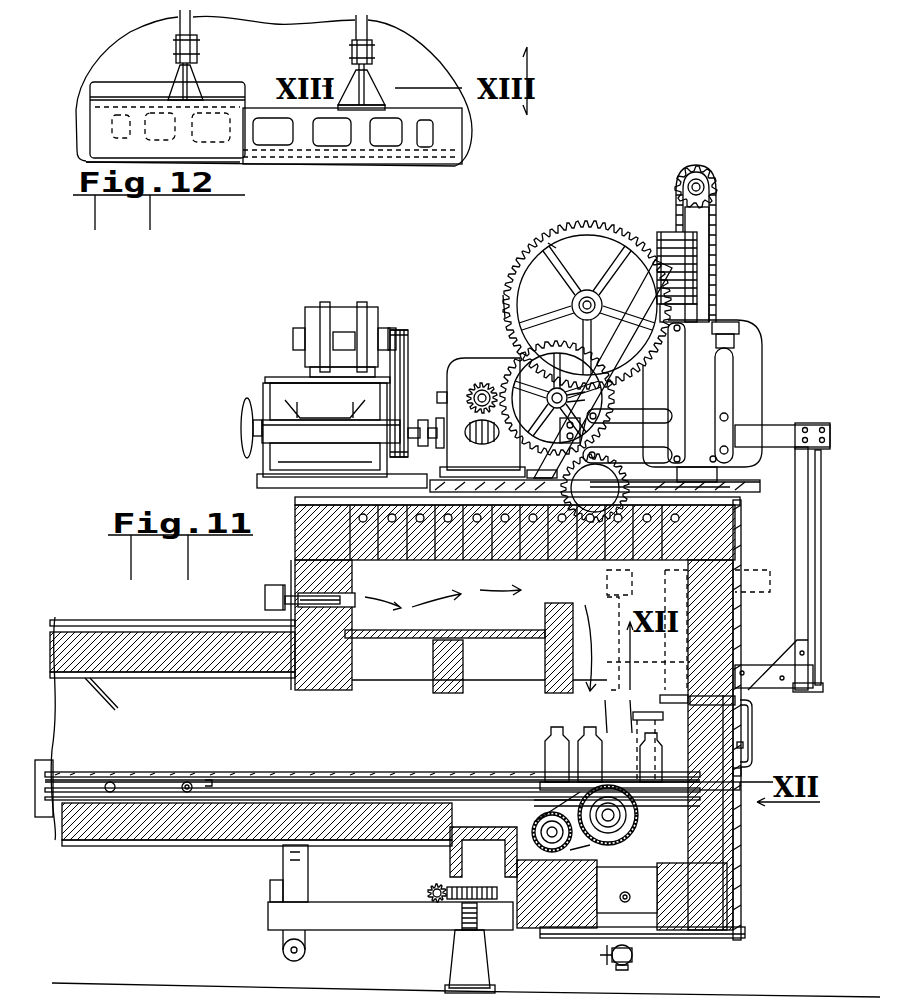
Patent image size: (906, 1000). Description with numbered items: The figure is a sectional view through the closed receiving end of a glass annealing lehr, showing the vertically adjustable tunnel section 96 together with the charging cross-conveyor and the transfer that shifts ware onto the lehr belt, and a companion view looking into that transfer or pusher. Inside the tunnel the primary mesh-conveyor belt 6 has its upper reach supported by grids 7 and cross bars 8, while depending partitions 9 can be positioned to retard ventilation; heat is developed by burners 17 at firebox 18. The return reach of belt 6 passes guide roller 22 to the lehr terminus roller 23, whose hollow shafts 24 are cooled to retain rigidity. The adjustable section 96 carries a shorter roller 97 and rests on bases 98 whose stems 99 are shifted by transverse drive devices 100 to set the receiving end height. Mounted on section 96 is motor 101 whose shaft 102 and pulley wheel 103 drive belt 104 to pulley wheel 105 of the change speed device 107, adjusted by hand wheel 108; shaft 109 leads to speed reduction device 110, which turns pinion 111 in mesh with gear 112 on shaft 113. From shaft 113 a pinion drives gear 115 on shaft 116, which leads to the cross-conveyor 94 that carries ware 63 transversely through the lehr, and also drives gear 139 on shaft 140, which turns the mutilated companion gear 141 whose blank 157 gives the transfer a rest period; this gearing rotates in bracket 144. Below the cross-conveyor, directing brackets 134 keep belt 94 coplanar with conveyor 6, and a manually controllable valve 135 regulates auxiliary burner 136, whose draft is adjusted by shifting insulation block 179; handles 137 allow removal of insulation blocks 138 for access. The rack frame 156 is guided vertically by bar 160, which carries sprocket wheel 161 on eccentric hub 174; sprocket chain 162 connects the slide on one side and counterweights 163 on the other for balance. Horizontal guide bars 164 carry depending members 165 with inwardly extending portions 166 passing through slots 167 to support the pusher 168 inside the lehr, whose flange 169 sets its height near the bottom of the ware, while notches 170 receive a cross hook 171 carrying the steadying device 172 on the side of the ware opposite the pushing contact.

In FIG. 11, the primary mesh-conveyor belt 6 is at (165, 772).
In FIG. 11, the grids 7 is at (208, 778).
In FIG. 11, the cross bars 8 is at (186, 785).
In FIG. 11, the depending partitions 9 is at (113, 702).
In FIG. 11, the burners 17 is at (275, 590).
In FIG. 11, the firebox 18 is at (405, 635).
In FIG. 11, the guide roller 22 is at (555, 852).
In FIG. 11, the primary conveyor lehr terminus roller 23 is at (640, 825).
In FIG. 11, the shafts 24 is at (535, 800).
In FIG. 11, the ware 63 is at (543, 745).
In FIG. 11, the cross-conveyor 94 is at (652, 757).
In FIG. 11, the adjustable section 96 is at (88, 843).
In FIG. 11, the roller 97 is at (300, 957).
In FIG. 11, the bases 98 is at (478, 953).
In FIG. 11, the stems 99 is at (460, 917).
In FIG. 11, the drive devices 100 is at (425, 893).
In FIG. 11, the motor 101 is at (375, 288).
In FIG. 11, the shaft 102 is at (405, 320).
In FIG. 11, the pulley wheel 103 is at (408, 340).
In FIG. 11, the belt 104 is at (402, 372).
In FIG. 11, the pulley wheel 105 is at (398, 458).
In FIG. 11, the change speed device 107 is at (278, 405).
In FIG. 11, the hand wheel 108 is at (240, 413).
In FIG. 11, the shaft 109 is at (390, 432).
In FIG. 11, the speed reduction device 110 is at (490, 360).
In FIG. 11, the pinion 111 is at (460, 385).
In FIG. 11, the gear 112 is at (557, 385).
In FIG. 11, the shaft 113 is at (592, 394).
In FIG. 11, the gear 115 is at (600, 485).
In FIG. 11, the shaft 116 is at (560, 440).
In FIG. 11, the directing brackets 134 is at (737, 826).
In FIG. 11, the valve 135 is at (632, 956).
In FIG. 11, the burner 136 is at (625, 893).
In FIG. 11, the handles 137 is at (752, 730).
In FIG. 11, the insulation blocks 138 is at (743, 745).
In FIG. 11, the gear 139 is at (607, 235).
In FIG. 11, the shaft 140 is at (572, 300).
In FIG. 11, the mutilated companion gear 141 is at (512, 290).
In FIG. 11, the bracket 144 is at (642, 308).
In FIG. 11, the frame 156 is at (727, 358).
In FIG. 11, the blank 157 is at (553, 240).
In FIG. 11, the bar 160 is at (702, 240).
In FIG. 11, the sprocket wheel 161 is at (718, 180).
In FIG. 11, the sprocket chain 162 is at (718, 212).
In FIG. 11, the counterweights 163 is at (666, 240).
In FIG. 11, the guide bars 164 is at (792, 410).
In FIG. 11, the depending members 165 is at (795, 503).
In FIG. 12, the inwardly extending portions 166 is at (352, 45).
In FIG. 11, the inwardly extending portions 166 is at (755, 660).
In FIG. 12, the slots 167 is at (415, 30).
In FIG. 12, the pusher 168 is at (405, 152).
In FIG. 11, the pusher 168 is at (660, 720).
In FIG. 12, the flange 169 is at (252, 158).
In FIG. 11, the flange 169 is at (741, 772).
In FIG. 12, the notches 170 is at (367, 75).
In FIG. 11, the notches 170 is at (740, 698).
In FIG. 12, the cross hook 171 is at (227, 82).
In FIG. 11, the cross hook 171 is at (663, 693).
In FIG. 12, the steadying device 172 is at (88, 160).
In FIG. 11, the steadying device 172 is at (570, 702).
In FIG. 11, the hub 174 is at (696, 166).
In FIG. 11, the insulation block 179 is at (575, 860).